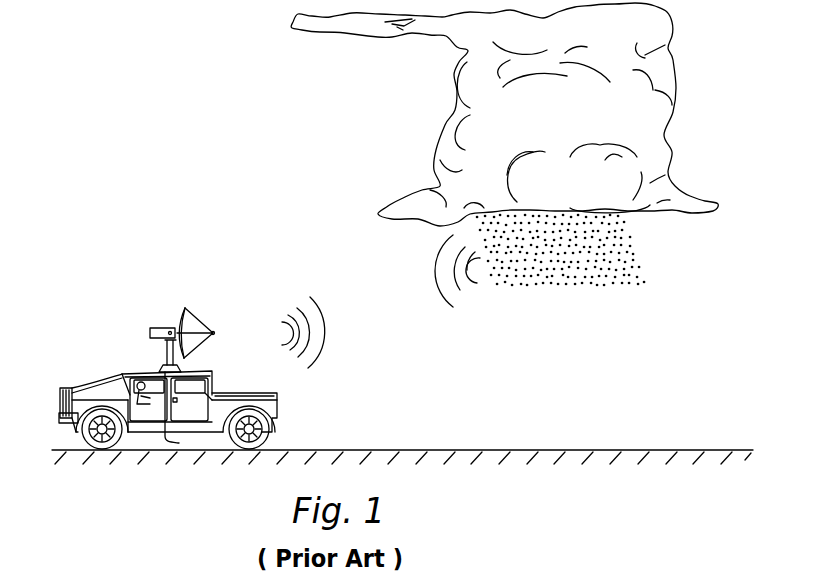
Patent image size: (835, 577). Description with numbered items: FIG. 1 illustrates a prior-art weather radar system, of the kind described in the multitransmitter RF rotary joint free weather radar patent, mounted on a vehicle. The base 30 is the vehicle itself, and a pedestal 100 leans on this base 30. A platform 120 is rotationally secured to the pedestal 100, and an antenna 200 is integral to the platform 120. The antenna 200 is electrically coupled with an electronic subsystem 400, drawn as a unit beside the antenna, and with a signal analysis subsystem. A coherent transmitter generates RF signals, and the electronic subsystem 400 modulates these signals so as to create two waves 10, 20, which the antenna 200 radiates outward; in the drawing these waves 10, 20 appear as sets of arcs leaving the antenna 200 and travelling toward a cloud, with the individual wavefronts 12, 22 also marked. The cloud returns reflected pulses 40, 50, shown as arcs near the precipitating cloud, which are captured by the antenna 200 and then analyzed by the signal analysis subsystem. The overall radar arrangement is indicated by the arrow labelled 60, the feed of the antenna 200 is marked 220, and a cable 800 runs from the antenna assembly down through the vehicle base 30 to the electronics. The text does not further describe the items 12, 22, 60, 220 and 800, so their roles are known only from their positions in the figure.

The wave 10 is at (322, 314).
The wavefront 12 is at (290, 314).
The wave 20 is at (306, 344).
The wavefront 22 is at (284, 334).
The base 30 is at (272, 398).
The reflected pulse 40 is at (433, 270).
The reflected pulse 50 is at (462, 290).
The weather modification system 60 is at (181, 293).
The pedestal 100 is at (178, 365).
The platform 120 is at (167, 340).
The antenna 200 is at (186, 306).
The feed horn 220 is at (215, 333).
The electronic subsystem 400 is at (152, 331).
The cable 800 is at (186, 411).